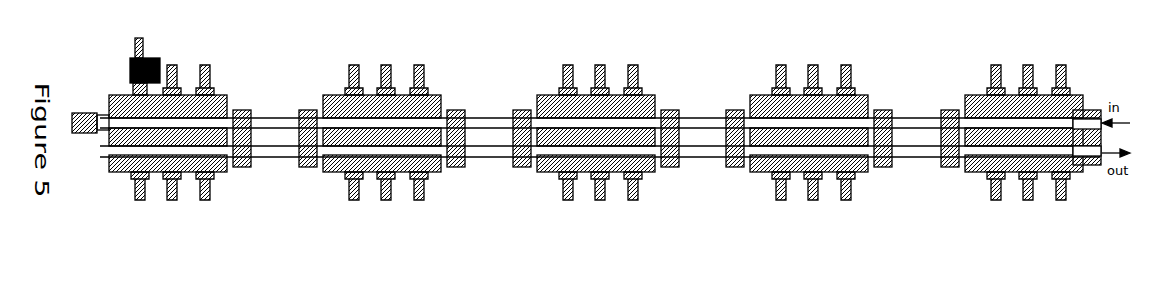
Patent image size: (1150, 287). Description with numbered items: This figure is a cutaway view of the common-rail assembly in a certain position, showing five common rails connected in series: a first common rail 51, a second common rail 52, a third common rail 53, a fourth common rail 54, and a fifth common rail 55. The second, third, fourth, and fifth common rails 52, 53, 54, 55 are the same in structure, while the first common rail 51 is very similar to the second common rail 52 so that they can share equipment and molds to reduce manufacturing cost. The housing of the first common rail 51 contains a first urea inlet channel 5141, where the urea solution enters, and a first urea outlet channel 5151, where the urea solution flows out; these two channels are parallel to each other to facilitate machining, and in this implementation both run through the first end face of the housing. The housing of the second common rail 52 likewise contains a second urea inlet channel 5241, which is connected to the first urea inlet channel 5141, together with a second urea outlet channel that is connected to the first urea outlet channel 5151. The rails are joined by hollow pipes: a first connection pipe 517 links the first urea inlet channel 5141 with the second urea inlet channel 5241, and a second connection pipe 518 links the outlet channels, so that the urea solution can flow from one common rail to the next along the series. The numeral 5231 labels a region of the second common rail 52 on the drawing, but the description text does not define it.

The first common rail 51 is at (161, 134).
The second common rail 52 is at (382, 134).
The third common rail 53 is at (547, 167).
The fourth common rail 54 is at (762, 163).
The fifth common rail 55 is at (973, 157).
The first connection pipe 517 is at (272, 118).
The second connection pipe 518 is at (267, 152).
The first urea inlet channel 5141 is at (180, 123).
The first urea outlet channel 5151 is at (182, 153).
The second urea inlet channel 5241 is at (393, 123).
The lower flow channel of second module 5231 is at (397, 153).